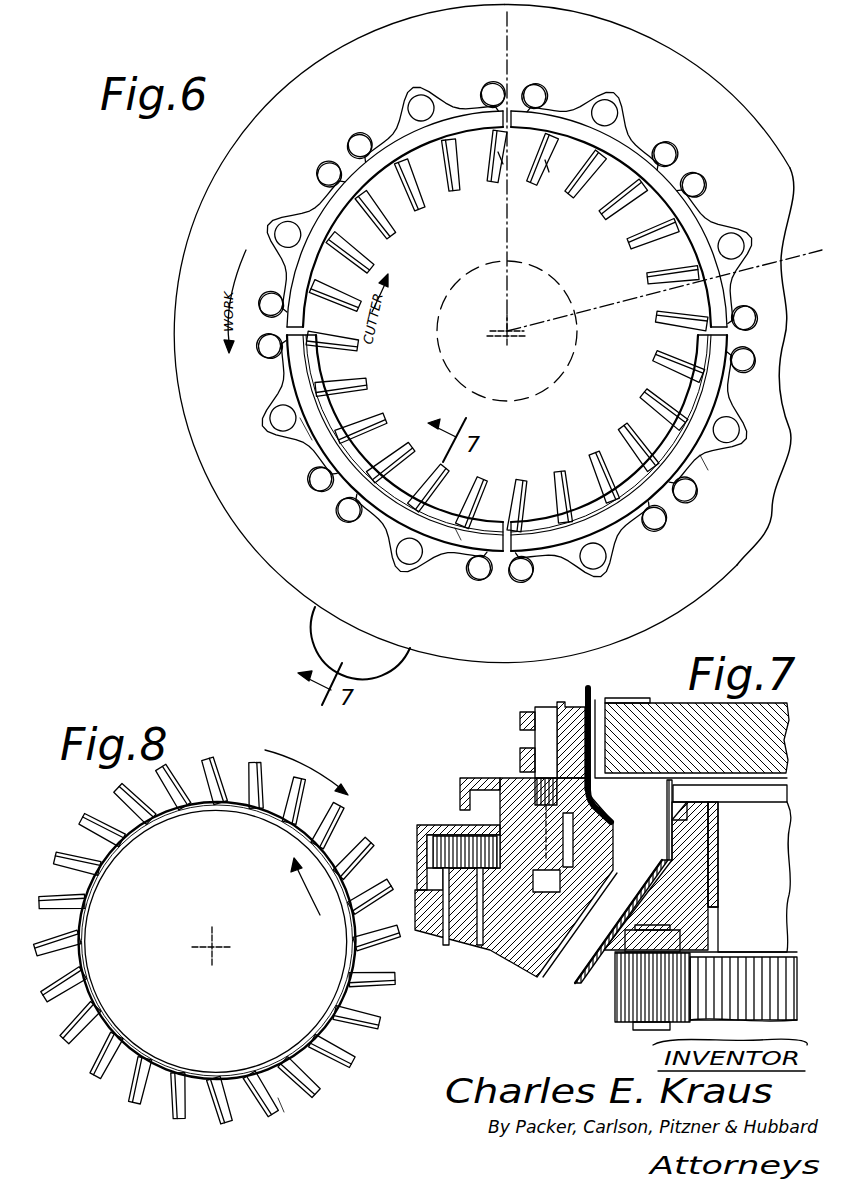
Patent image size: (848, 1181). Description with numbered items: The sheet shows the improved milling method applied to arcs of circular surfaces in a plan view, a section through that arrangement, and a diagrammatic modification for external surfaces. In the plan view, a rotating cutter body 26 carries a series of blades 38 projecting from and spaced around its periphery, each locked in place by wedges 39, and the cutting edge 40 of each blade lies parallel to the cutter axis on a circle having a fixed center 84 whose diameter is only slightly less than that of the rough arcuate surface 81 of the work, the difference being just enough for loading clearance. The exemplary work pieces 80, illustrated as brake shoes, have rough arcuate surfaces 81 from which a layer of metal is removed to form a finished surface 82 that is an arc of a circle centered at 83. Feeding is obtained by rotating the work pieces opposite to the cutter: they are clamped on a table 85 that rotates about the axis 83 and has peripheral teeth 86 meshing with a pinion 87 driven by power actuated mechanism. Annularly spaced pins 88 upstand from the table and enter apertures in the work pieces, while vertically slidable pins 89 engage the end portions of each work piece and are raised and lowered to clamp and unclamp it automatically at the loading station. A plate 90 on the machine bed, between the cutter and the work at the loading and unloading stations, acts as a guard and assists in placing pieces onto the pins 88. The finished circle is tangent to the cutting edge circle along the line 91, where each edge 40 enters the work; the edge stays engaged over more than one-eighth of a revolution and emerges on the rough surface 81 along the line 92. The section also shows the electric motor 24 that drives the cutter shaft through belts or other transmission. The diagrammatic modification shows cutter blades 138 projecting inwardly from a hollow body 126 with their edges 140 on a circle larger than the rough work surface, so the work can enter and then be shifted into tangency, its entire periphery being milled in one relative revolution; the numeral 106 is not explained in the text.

In FIG. 7, the electric motor 24 is at (772, 860).
In FIG. 6, the cutter body 26 is at (367, 443).
In FIG. 7, the cutter body 26 is at (772, 712).
In FIG. 6, the blades 38 is at (503, 165).
In FIG. 7, the blades 38 is at (628, 698).
In FIG. 6, the wedges 39 is at (549, 174).
In FIG. 6, the cutting edge 40 is at (347, 366).
In FIG. 7, the cutting edge 40 is at (597, 778).
In FIG. 6, the work pieces 80 is at (408, 118).
In FIG. 7, the work pieces 80 is at (583, 704).
In FIG. 6, the rough arcuate surface 81 is at (702, 462).
In FIG. 6, the finished surface 82 is at (322, 440).
In FIG. 6, the center of curvature 83 is at (510, 338).
In FIG. 6, the fixed center 84 is at (505, 329).
In FIG. 7, the table 85 is at (512, 790).
In FIG. 7, the peripheral teeth 86 is at (470, 868).
In FIG. 7, the pinion 87 is at (455, 845).
In FIG. 6, the pins 88 is at (427, 100).
In FIG. 7, the pins 88 is at (535, 735).
In FIG. 6, the vertically slidable pins 89 is at (489, 96).
In FIG. 7, the vertically slidable pins 89 is at (560, 848).
In FIG. 6, the plate 90 is at (458, 538).
In FIG. 7, the plate 90 is at (597, 700).
In FIG. 6, the line of tangency 91 is at (507, 40).
In FIG. 6, the line of emergence 92 is at (664, 290).
In FIG. 8, the work piece 106 is at (153, 1047).
In FIG. 8, the hollow body 126 is at (197, 1103).
In FIG. 8, the cutter blades 138 is at (278, 1110).
In FIG. 8, the edges 140 is at (300, 1042).